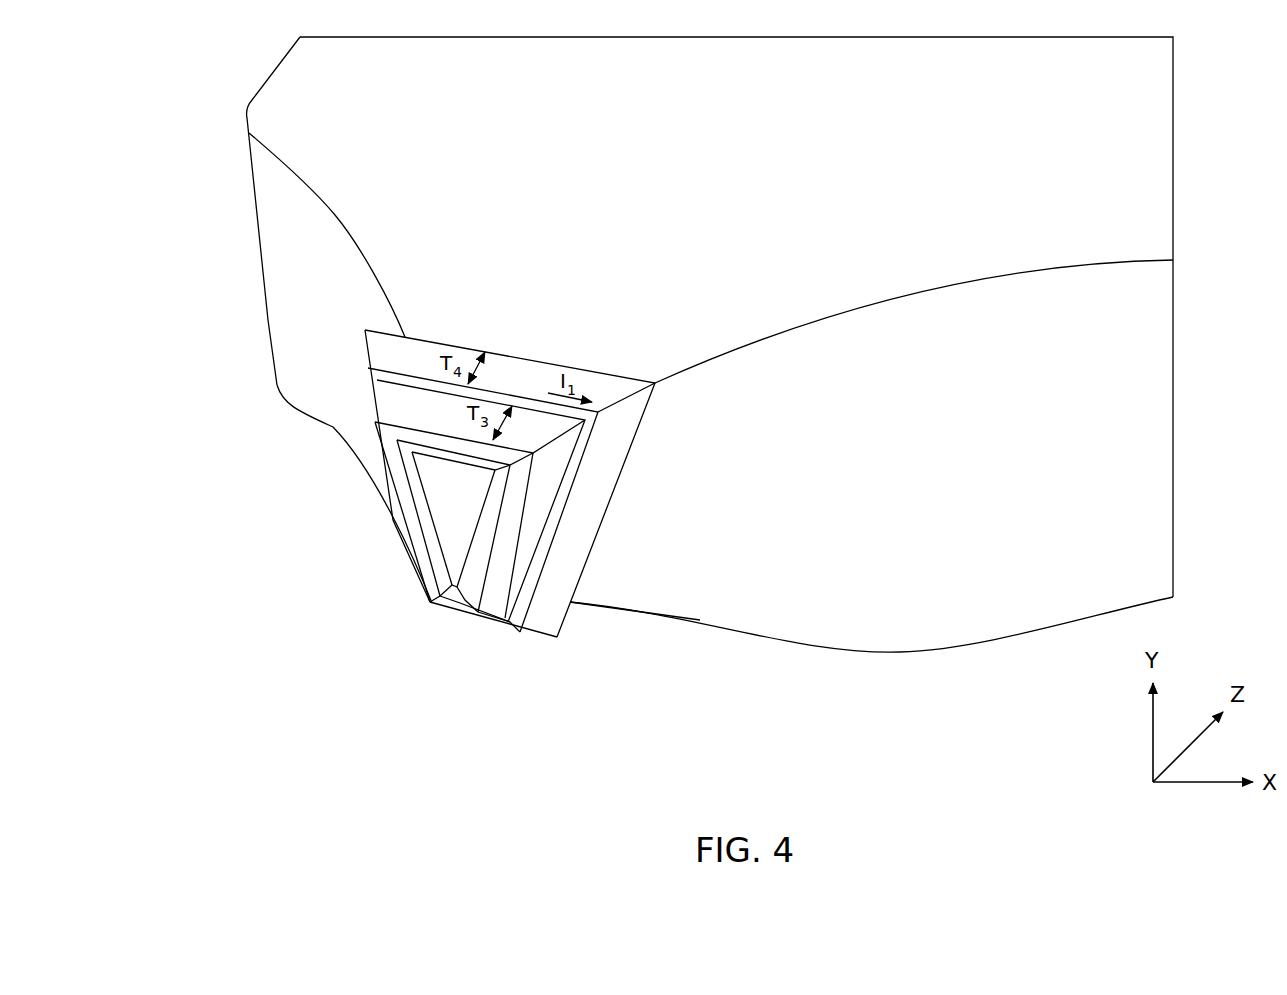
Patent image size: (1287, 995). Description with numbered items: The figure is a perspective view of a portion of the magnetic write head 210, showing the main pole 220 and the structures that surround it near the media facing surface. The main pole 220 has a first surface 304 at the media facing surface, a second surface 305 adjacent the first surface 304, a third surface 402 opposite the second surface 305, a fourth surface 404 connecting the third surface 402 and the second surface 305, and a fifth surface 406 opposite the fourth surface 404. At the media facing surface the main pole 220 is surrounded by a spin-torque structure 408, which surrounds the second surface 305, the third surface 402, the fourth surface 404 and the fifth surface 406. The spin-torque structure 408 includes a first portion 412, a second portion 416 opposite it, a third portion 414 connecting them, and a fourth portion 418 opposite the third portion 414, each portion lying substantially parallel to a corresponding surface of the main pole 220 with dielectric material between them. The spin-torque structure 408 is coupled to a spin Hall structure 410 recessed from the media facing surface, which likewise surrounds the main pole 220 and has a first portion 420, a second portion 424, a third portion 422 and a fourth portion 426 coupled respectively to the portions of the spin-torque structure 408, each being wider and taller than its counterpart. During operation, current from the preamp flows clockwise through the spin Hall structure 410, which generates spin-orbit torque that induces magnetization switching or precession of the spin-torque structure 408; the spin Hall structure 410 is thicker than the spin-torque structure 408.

The magnetic write head 210 is at (226, 118).
The main pole 220 is at (256, 308).
The first portion of the spin Hall structure 420 is at (515, 375).
The spin Hall structure 410 is at (413, 360).
The third portion of the spin Hall structure 422 is at (375, 380).
The first portion of the spin-torque structure 412 is at (437, 417).
The spin-torque structure 408 is at (385, 408).
The second surface 305 is at (418, 447).
The third portion of the spin-torque structure 414 is at (400, 483).
The first surface 304 is at (460, 497).
The fourth surface 404 is at (450, 556).
The second portion of the spin-torque structure 416 is at (443, 605).
The third surface 402 is at (455, 615).
The second portion of the spin Hall structure 424 is at (494, 627).
The fourth portion of the spin-torque structure 418 is at (510, 568).
The fifth surface 406 is at (487, 507).
The fourth portion of the spin Hall structure 426 is at (595, 500).